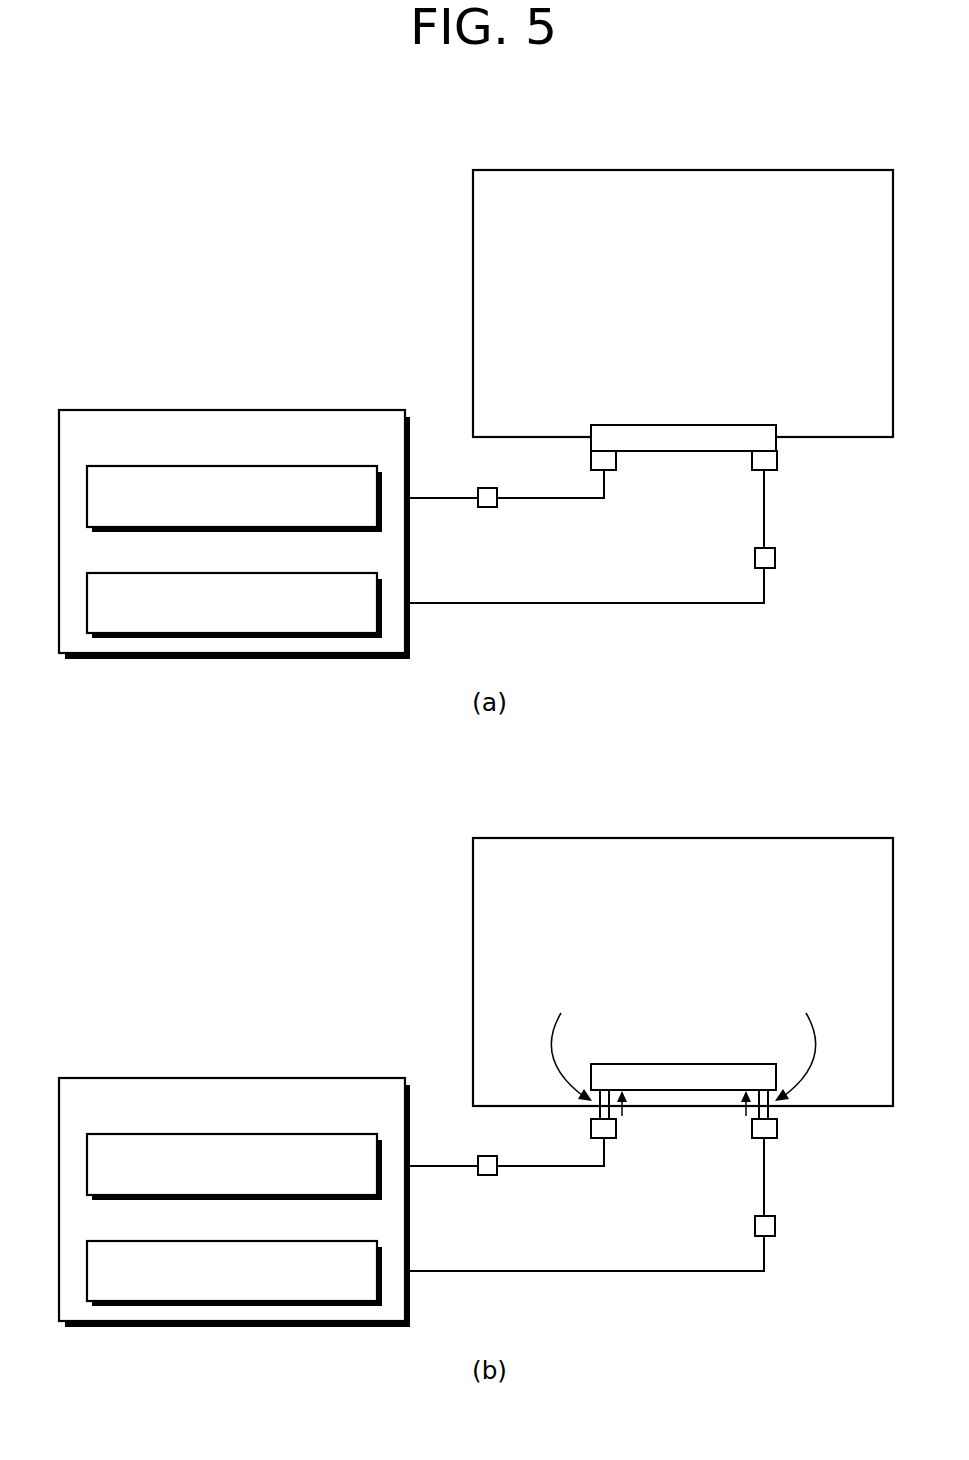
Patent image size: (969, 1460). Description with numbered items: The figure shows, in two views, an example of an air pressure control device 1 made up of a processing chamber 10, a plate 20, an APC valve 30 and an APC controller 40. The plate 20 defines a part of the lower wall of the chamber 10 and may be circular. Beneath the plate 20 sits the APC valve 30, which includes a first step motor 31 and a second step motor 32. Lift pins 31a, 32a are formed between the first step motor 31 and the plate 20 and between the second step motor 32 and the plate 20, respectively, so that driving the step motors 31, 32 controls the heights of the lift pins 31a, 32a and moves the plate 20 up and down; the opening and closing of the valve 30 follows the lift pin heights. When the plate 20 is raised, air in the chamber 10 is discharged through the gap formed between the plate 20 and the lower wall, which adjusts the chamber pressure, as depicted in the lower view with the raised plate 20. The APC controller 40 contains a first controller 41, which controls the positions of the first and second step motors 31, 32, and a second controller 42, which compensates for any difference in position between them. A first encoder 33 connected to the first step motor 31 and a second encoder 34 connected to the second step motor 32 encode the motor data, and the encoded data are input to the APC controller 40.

The APC device 1 is at (624, 103).
The processing chamber 10 is at (728, 170).
The plate 20 is at (682, 425).
The APC valve 30 is at (740, 530).
The first step motor 31 is at (616, 458).
The second step motor 32 is at (752, 458).
The lift pin 31a is at (598, 1112).
The lift pin 32a is at (771, 1112).
The first encoder 33 is at (487, 507).
The second encoder 34 is at (777, 557).
The APC controller 40 is at (243, 410).
The first controller 41 is at (258, 466).
The second controller 42 is at (258, 573).